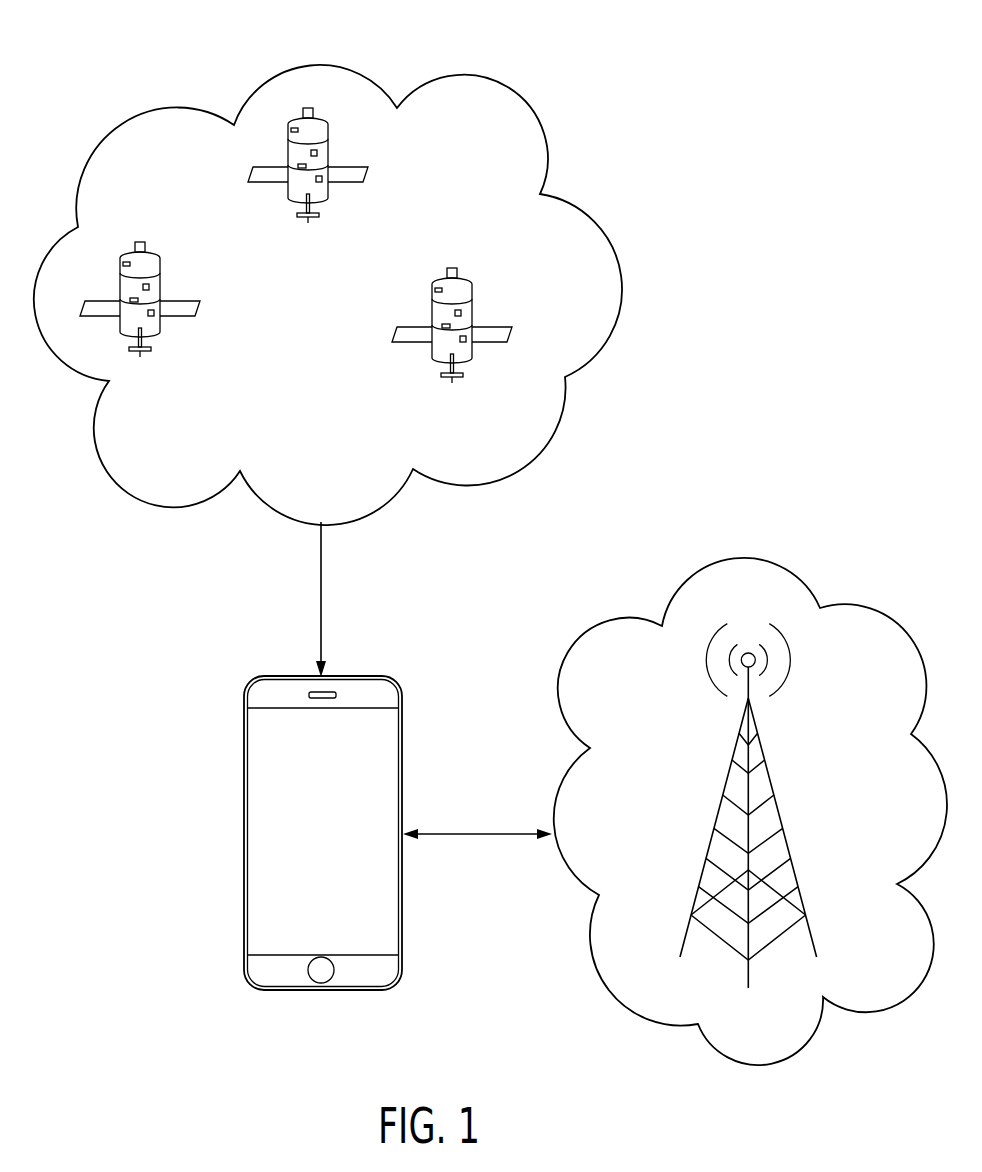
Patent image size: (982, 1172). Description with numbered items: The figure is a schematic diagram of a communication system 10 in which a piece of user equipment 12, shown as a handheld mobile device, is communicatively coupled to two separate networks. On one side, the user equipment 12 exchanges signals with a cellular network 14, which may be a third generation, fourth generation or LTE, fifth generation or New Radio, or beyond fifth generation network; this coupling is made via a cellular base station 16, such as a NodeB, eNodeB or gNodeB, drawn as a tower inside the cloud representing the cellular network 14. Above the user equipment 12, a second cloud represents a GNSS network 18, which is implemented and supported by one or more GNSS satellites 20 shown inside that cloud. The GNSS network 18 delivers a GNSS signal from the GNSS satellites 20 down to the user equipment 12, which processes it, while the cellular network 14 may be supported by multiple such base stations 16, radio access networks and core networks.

The communication system 10 is at (796, 136).
The user equipment 12 is at (243, 834).
The cellular network 14 is at (749, 558).
The cellular base station 16 is at (720, 802).
The GNSS network 18 is at (313, 63).
The GNSS satellite 20 is at (303, 245).